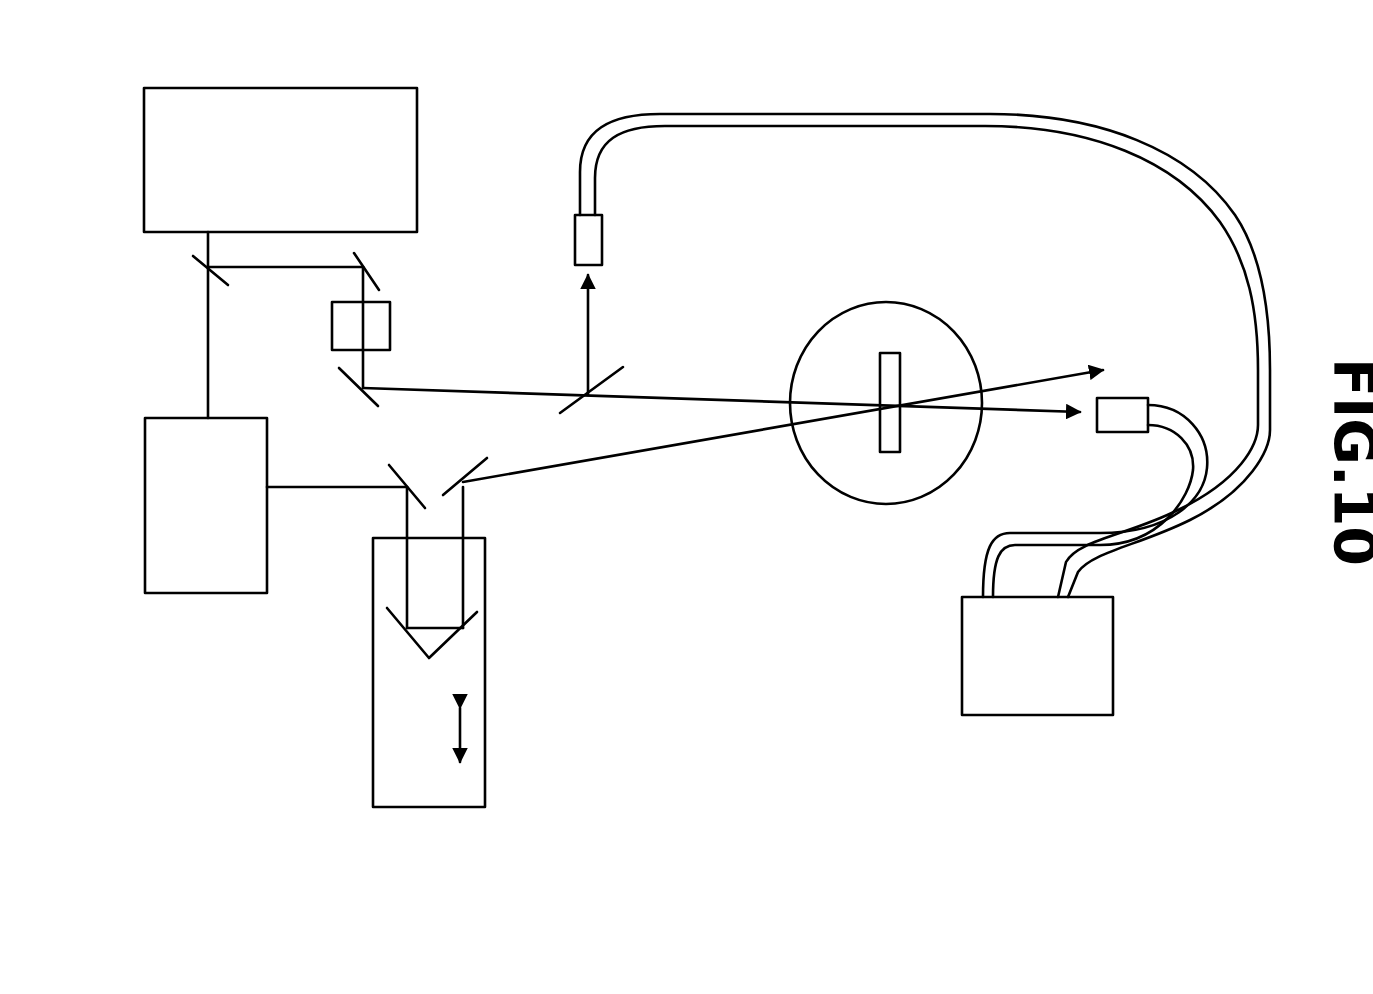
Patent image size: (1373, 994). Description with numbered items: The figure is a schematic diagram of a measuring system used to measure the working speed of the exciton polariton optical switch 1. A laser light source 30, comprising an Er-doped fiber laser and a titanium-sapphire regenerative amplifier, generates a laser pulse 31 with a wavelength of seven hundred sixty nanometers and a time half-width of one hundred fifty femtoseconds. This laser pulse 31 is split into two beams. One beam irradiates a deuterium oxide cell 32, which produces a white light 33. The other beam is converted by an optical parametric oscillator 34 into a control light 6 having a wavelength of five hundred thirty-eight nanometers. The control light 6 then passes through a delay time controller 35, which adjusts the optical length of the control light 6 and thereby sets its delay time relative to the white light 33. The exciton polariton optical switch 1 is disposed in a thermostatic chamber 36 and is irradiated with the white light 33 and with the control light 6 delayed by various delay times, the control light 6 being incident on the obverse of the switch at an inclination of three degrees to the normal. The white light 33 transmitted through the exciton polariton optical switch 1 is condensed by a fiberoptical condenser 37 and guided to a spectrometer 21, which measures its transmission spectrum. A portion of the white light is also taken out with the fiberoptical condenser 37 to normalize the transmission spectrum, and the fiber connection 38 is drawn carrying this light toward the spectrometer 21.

The laser light source 30 is at (400, 150).
The laser pulse 31 is at (207, 240).
The deuterium oxide cell 32 is at (392, 327).
The white light 33 is at (680, 395).
The optical parametric oscillator 34 is at (192, 578).
The delay time controller 35 is at (487, 640).
The thermostatic chamber 36 is at (890, 302).
The fiberoptical condenser 37 is at (1003, 545).
The optical fiber 38 is at (602, 160).
The control light 6 is at (675, 447).
The exciton polariton optical switch 1 is at (890, 430).
The spectrometer 21 is at (1090, 660).